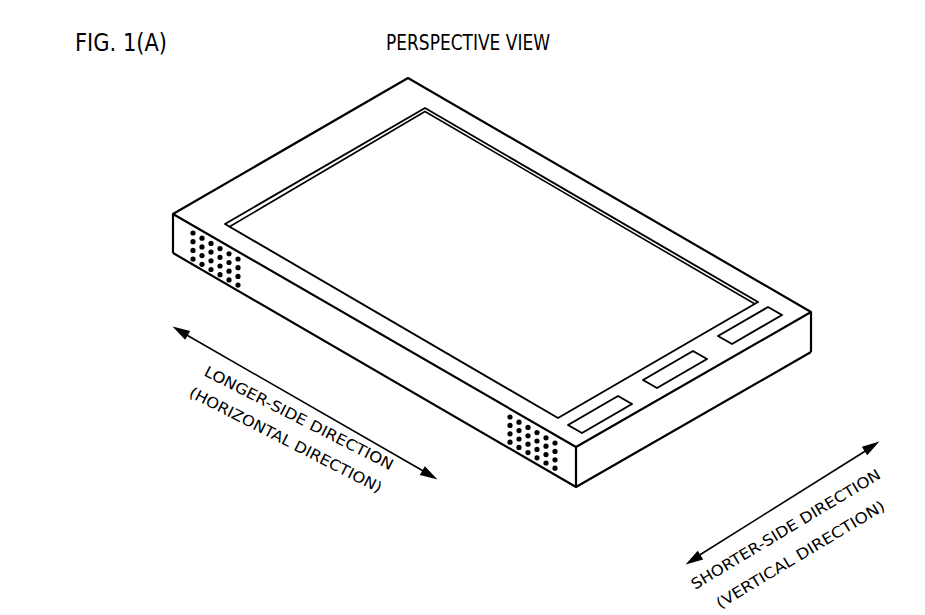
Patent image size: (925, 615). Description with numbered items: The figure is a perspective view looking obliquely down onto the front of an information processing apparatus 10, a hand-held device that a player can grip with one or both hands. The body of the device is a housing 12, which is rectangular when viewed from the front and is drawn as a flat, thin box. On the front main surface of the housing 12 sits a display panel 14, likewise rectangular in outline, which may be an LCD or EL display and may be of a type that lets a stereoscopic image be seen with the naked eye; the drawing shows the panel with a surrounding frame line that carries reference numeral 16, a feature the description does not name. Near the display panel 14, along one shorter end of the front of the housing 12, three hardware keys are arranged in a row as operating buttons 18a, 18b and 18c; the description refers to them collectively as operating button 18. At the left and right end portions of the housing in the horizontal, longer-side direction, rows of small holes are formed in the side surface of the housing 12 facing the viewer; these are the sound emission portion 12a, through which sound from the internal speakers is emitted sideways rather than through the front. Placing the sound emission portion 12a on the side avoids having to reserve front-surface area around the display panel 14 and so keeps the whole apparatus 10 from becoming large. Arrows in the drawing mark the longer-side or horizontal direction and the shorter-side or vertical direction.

The information processing apparatus 10 is at (326, 76).
The housing 12 is at (460, 118).
The sound emission portion 12a is at (262, 280).
The display panel 14 is at (577, 222).
The touch panel / display frame 16 is at (532, 183).
The operating button 18 is at (703, 411).
The operating button 18a is at (602, 415).
The operating button 18b is at (684, 369).
The operating button 18c is at (774, 365).